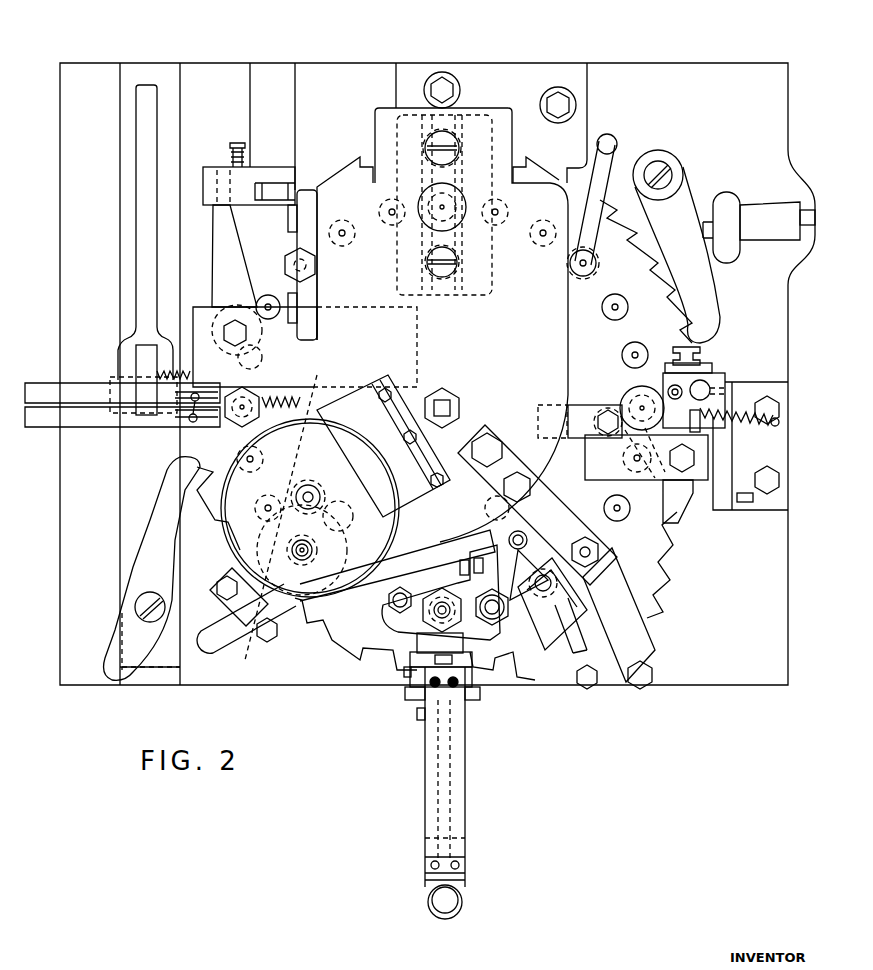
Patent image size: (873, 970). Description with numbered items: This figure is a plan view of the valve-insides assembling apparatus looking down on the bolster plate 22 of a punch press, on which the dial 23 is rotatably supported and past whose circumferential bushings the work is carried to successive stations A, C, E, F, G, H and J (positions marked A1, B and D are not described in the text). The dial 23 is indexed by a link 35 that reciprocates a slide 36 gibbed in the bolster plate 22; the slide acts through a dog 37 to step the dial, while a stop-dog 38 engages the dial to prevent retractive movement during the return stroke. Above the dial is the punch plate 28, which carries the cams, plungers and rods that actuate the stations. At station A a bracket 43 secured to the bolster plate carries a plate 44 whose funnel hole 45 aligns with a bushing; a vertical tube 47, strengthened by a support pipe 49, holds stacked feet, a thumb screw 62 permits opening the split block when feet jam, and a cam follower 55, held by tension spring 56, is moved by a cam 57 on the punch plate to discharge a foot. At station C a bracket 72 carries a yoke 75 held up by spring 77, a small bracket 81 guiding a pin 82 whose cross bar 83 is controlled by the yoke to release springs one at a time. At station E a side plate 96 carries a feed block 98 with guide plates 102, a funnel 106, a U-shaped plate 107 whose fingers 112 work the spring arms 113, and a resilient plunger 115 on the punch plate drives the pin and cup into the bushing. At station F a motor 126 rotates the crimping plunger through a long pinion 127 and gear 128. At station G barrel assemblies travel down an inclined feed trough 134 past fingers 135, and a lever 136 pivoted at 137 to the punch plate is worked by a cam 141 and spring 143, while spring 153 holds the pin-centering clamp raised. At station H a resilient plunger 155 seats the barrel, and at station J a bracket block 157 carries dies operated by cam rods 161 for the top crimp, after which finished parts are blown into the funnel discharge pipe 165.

The bolster plate 22 is at (772, 686).
The dial 23 is at (657, 560).
The punch plate 28 is at (552, 358).
The link 35 is at (157, 143).
The slide 36 is at (150, 68).
The dog 37 is at (128, 570).
The stop-dog 38 is at (695, 190).
The bracket 43 is at (752, 380).
The plate 44 is at (637, 393).
The funnel hole 45 is at (648, 402).
The vertical tube 47 is at (682, 408).
The support pipe 49 is at (705, 385).
The cam follower 55 is at (600, 480).
The tension spring 56 is at (755, 425).
The cam 57 is at (608, 408).
The thumb screw 62 is at (703, 352).
The bracket 72 is at (645, 640).
The yoke 75 is at (590, 568).
The spring 77 is at (523, 565).
The small bracket 81 is at (566, 636).
The pin 82 is at (584, 633).
The cross bar 83 is at (552, 604).
The side plate 96 is at (408, 700).
The feed block 98 is at (475, 705).
The guide plates 102 is at (468, 633).
The funnel 106 is at (432, 905).
The U-shaped plate 107 is at (404, 670).
The fingers 112 is at (440, 643).
The spring arms 113 is at (478, 668).
The resilient plunger 115 is at (442, 597).
The motor 126 is at (242, 528).
The long pinion 127 is at (318, 490).
The gear 128 is at (325, 550).
The inclined feed trough 134 is at (97, 420).
The fingers 135 is at (200, 393).
The lever 136 is at (222, 258).
The pivot 137 is at (248, 333).
The cam 141 is at (209, 167).
The spring 143 is at (298, 400).
The spring 153 is at (160, 370).
The resilient plunger 155 is at (292, 268).
The bracket block 157 is at (588, 110).
The cam rods 161 is at (460, 150).
The funnel discharge pipe 165 is at (605, 167).
The station A is at (693, 505).
The pin A1 is at (618, 521).
The lever B is at (570, 557).
The station C is at (580, 627).
The bolt D is at (498, 618).
The station E is at (441, 695).
The station F is at (267, 653).
The station G is at (180, 422).
The station H is at (281, 265).
The station J is at (454, 154).